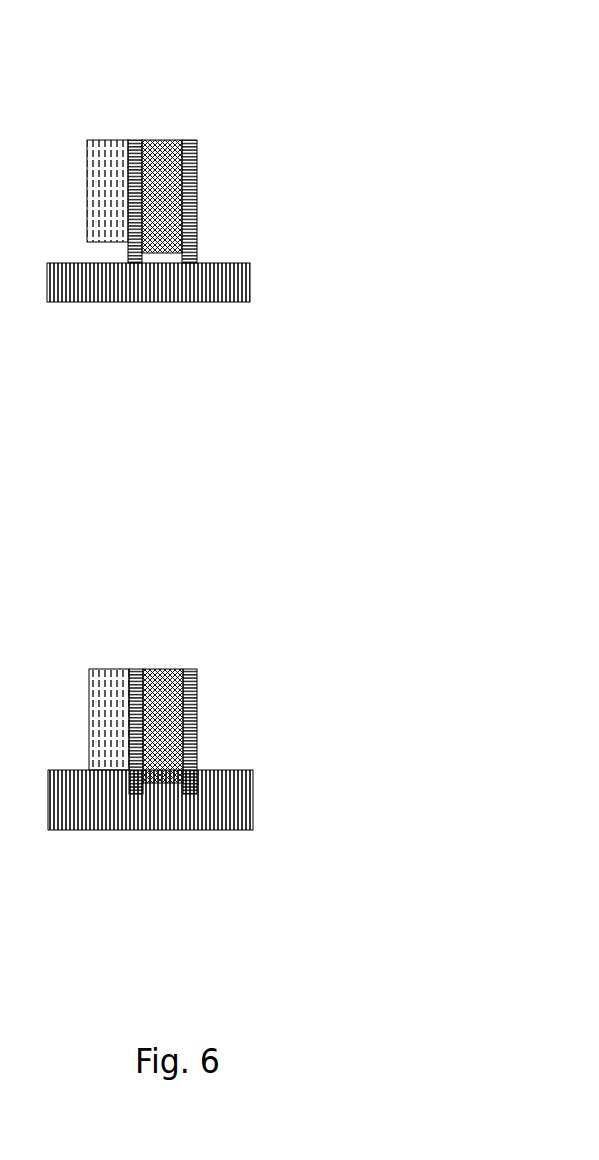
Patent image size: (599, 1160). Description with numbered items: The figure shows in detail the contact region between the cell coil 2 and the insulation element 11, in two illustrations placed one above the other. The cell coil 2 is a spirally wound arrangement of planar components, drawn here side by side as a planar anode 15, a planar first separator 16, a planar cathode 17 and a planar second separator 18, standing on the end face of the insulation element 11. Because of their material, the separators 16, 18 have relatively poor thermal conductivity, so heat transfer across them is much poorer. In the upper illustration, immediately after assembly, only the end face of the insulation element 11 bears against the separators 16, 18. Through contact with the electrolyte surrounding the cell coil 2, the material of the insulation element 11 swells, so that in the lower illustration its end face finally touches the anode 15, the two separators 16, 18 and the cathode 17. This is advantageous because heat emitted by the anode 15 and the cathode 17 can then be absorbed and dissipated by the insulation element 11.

The cell coil 2 is at (291, 143).
The insulation element 11 is at (168, 280).
The anode 15 is at (108, 163).
The first separator 16 is at (135, 157).
The cathode 17 is at (168, 165).
The second separator 18 is at (190, 163).